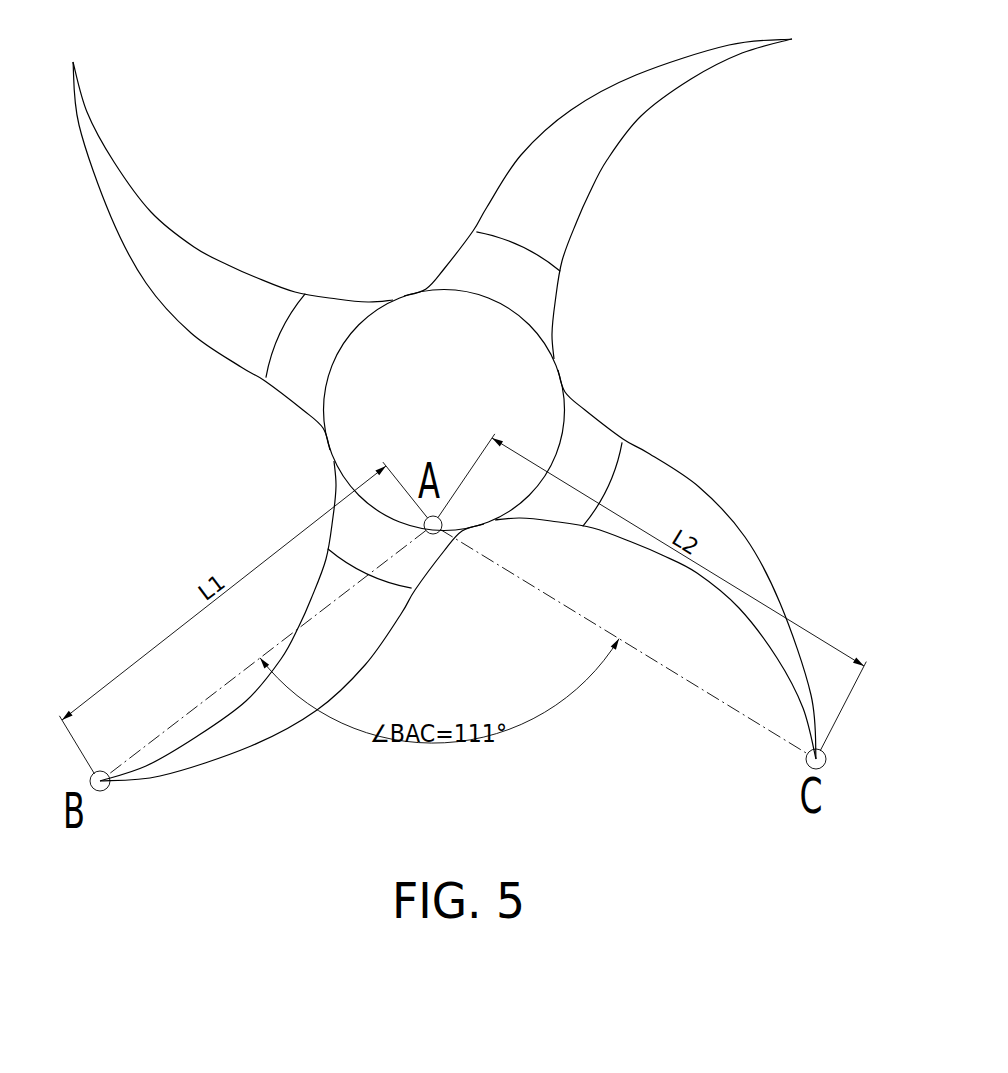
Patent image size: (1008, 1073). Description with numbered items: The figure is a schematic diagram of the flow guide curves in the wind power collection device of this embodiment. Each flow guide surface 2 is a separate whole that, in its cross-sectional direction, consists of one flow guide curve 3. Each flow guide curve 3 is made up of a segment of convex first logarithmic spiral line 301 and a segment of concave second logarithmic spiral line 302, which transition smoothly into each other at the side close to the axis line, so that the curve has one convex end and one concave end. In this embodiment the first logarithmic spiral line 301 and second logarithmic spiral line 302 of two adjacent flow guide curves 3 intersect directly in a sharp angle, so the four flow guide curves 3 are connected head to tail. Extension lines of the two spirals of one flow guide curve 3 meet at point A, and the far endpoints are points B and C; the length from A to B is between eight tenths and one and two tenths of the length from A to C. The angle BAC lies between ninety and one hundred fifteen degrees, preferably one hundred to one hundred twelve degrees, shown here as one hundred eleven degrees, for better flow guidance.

The flow guide surface 2 is at (286, 289).
The flow guide curve 3 is at (465, 410).
The first logarithmic spiral line 301 is at (512, 162).
The second logarithmic spiral line 302 is at (202, 247).